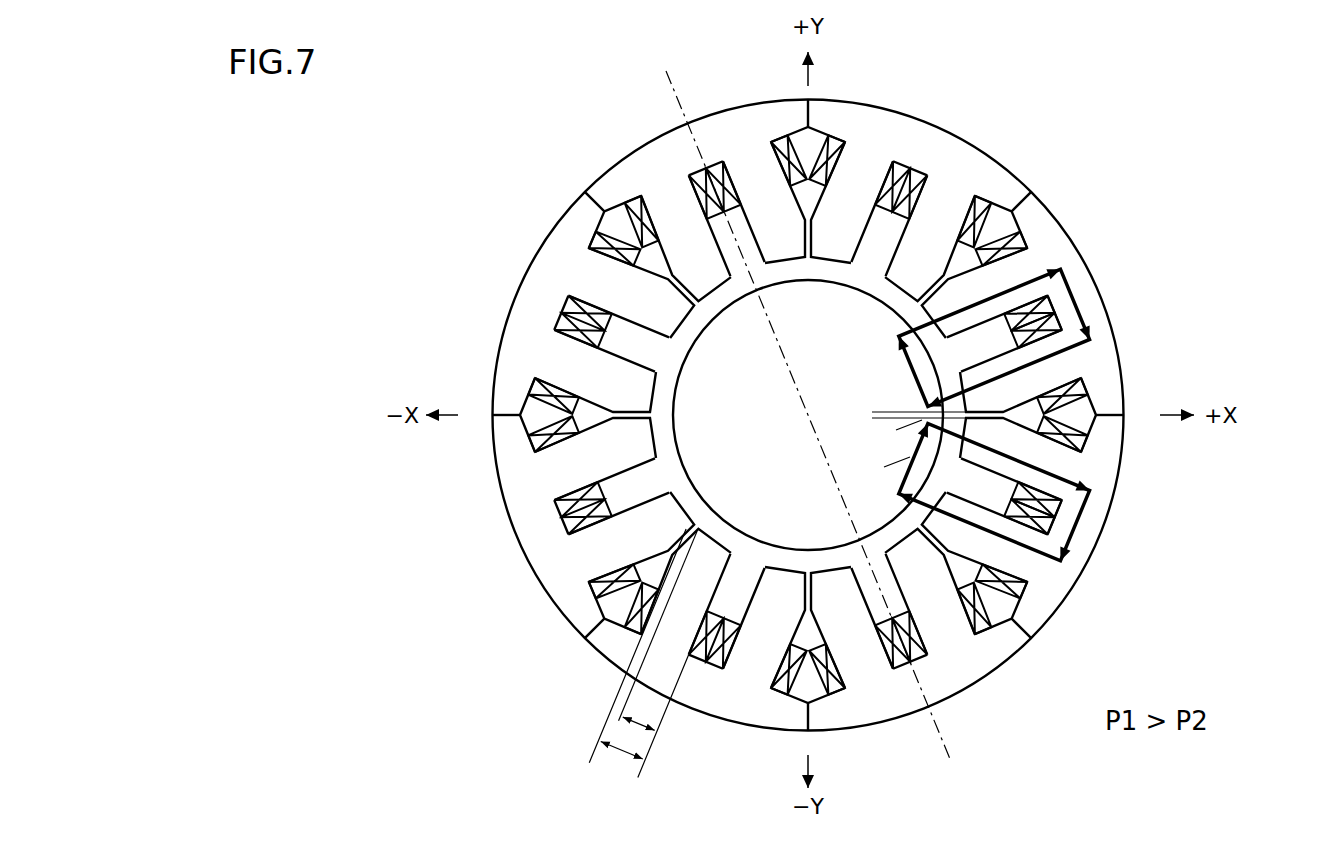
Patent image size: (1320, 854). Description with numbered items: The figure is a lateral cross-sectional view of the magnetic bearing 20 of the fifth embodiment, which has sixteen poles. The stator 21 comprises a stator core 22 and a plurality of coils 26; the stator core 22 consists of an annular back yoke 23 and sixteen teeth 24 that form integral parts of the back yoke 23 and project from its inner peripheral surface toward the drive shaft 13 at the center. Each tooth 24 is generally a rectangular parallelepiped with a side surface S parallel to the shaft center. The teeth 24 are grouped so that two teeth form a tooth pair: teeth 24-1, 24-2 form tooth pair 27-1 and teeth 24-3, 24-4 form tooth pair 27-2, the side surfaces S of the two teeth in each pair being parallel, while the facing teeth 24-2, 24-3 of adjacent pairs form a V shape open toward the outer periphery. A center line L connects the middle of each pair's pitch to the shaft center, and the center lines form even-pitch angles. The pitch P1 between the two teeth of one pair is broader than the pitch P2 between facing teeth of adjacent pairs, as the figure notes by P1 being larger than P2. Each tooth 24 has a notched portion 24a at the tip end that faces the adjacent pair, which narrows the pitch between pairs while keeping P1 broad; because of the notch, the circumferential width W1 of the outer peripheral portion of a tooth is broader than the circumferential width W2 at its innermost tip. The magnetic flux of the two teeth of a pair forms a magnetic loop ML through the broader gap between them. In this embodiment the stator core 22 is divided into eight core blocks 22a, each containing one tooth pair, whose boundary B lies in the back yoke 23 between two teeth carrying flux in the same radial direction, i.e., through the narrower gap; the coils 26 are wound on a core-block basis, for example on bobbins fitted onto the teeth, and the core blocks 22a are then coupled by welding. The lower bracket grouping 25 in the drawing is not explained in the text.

The drive shaft 13 is at (718, 407).
The magnetic bearing 20 is at (1060, 96).
The stator 21 is at (426, 186).
The stator core 22 is at (470, 169).
The core block 22a is at (657, 150).
The back yoke 23 is at (582, 227).
The tooth 24 is at (606, 280).
The notched portion 24a is at (813, 587).
The tooth 24-1 is at (1042, 524).
The tooth 24-2 is at (1052, 494).
The tooth 24-3 is at (1050, 336).
The tooth 24-4 is at (1042, 284).
The coil unit 25 is at (446, 579).
The coil 26 is at (567, 303).
The tooth pair 27-1 is at (1222, 488).
The tooth pair 27-2 is at (1222, 246).
The boundary B is at (593, 195).
The center line L is at (676, 86).
The magnetic loop ML is at (1015, 280).
The pitch P1 is at (905, 434).
The pitch P2 is at (879, 440).
The side surface S is at (998, 355).
The circumferential width W1 is at (620, 752).
The circumferential width W2 is at (637, 720).